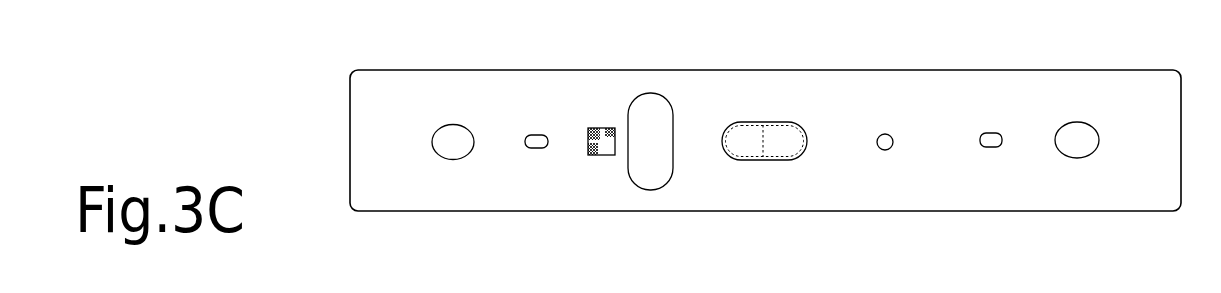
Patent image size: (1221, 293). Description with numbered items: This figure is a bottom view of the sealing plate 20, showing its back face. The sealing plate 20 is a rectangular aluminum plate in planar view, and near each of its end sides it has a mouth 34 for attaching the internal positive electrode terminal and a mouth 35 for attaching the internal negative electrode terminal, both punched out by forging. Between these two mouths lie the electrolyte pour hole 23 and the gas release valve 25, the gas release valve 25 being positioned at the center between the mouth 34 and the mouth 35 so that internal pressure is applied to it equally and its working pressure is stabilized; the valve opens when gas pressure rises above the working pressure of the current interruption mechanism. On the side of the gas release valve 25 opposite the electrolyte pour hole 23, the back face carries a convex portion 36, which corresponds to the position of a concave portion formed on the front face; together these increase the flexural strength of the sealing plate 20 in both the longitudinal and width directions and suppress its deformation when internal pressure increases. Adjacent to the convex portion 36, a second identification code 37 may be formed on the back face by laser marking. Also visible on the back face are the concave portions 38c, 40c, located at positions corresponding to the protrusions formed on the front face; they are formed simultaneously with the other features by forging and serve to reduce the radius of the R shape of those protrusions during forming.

The sealing plate 20 is at (778, 82).
The electrolyte pour hole 23 is at (887, 133).
The gas release valve 25 is at (747, 148).
The mouth for attaching the internal positive electrode terminal 34 is at (1072, 138).
The mouth for attaching the internal negative electrode terminal 35 is at (450, 128).
The convex portion 36 is at (652, 105).
The second identification code 37 is at (597, 155).
The concave portion 38c is at (990, 147).
The concave portion 40c is at (535, 148).